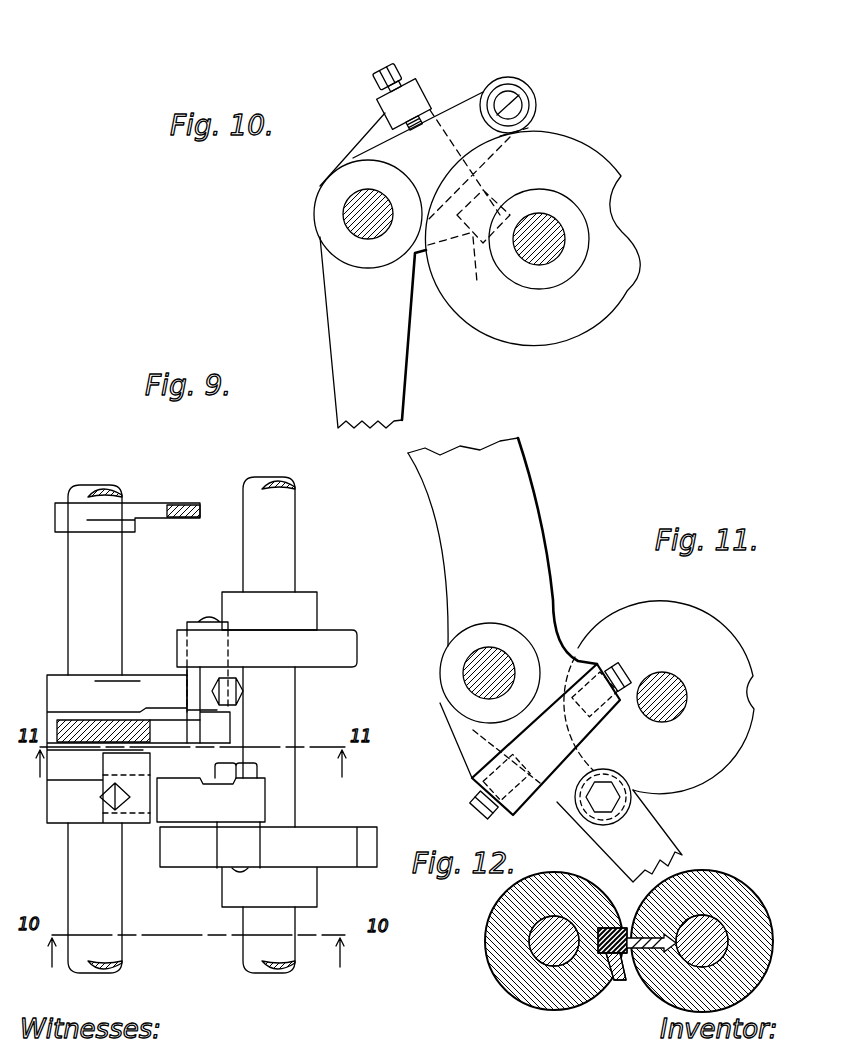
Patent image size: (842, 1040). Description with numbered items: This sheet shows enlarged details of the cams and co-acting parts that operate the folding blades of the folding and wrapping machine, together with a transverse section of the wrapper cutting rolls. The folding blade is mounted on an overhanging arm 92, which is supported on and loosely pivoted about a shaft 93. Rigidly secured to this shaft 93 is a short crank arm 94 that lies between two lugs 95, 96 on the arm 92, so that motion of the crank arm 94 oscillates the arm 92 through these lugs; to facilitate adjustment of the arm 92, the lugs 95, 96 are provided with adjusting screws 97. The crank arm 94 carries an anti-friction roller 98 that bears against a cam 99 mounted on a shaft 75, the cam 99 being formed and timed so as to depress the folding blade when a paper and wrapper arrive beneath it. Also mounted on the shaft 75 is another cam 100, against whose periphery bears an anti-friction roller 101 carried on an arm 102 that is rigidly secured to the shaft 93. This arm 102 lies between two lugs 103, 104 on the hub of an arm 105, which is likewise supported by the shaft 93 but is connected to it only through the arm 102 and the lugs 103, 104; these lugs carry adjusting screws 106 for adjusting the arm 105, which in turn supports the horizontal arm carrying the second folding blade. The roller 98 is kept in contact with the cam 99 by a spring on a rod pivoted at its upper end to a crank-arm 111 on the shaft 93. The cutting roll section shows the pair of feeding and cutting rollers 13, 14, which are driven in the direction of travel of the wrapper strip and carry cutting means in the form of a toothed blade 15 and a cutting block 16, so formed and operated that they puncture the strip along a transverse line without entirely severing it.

In FIG. 12, the feeding and cutting roller 13 is at (523, 993).
In FIG. 12, the feeding and cutting roller 14 is at (740, 982).
In FIG. 12, the toothed blade 15 is at (650, 957).
In FIG. 12, the cutting block 16 is at (613, 957).
In FIG. 10, the shaft 75 is at (550, 257).
In FIG. 9, the shaft 75 is at (283, 538).
In FIG. 11, the shaft 75 is at (677, 680).
In FIG. 9, the overhanging arm 92 is at (95, 727).
In FIG. 11, the overhanging arm 92 is at (537, 495).
In FIG. 10, the shaft 93 is at (358, 219).
In FIG. 9, the shaft 93 is at (78, 888).
In FIG. 11, the shaft 93 is at (500, 650).
In FIG. 9, the crank arm 94 is at (132, 687).
In FIG. 11, the crank arm 94 is at (557, 803).
In FIG. 11, the lug 95 is at (482, 777).
In FIG. 9, the lug 96 is at (213, 708).
In FIG. 11, the lug 96 is at (607, 668).
In FIG. 9, the adjusting screw 97 is at (240, 676).
In FIG. 11, the adjusting screw 97 is at (630, 672).
In FIG. 9, the anti-friction roller 98 is at (200, 617).
In FIG. 11, the anti-friction roller 98 is at (631, 807).
In FIG. 9, the cam 99 is at (333, 640).
In FIG. 11, the cam 99 is at (735, 750).
In FIG. 10, the cam 100 is at (620, 308).
In FIG. 9, the cam 100 is at (343, 860).
In FIG. 10, the anti-friction roller 101 is at (534, 108).
In FIG. 9, the anti-friction roller 101 is at (230, 857).
In FIG. 10, the arm 102 is at (470, 103).
In FIG. 9, the arm 102 is at (190, 808).
In FIG. 10, the lug 103 is at (383, 102).
In FIG. 9, the lug 103 is at (117, 822).
In FIG. 10, the lug 104 is at (478, 206).
In FIG. 10, the arm 105 is at (397, 377).
In FIG. 10, the adjusting screw 106 is at (395, 66).
In FIG. 9, the adjusting screw 106 is at (105, 808).
In FIG. 9, the crank-arm 111 is at (173, 503).
In FIG. 11, the crank-arm 111 is at (667, 842).